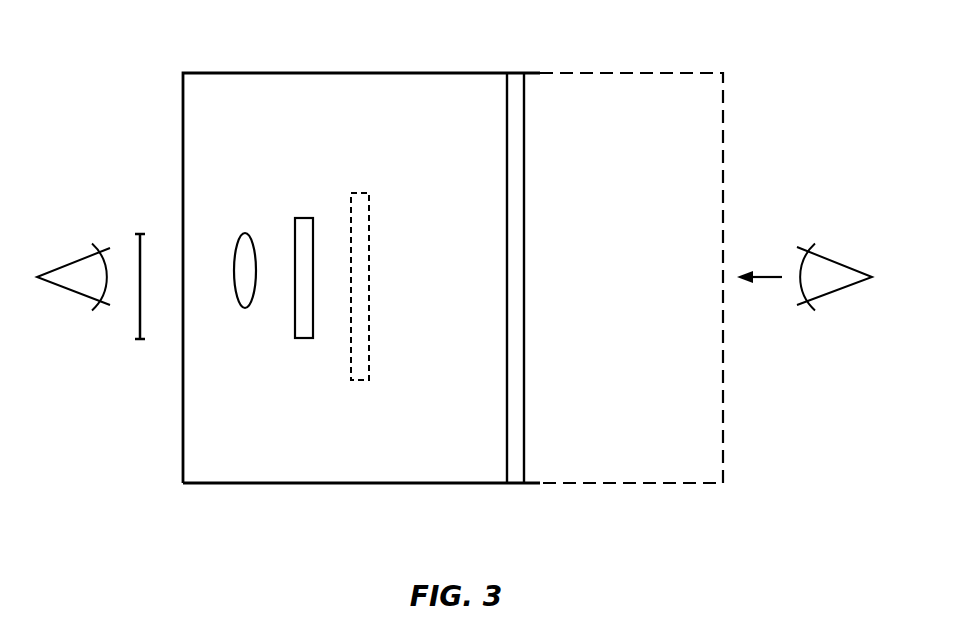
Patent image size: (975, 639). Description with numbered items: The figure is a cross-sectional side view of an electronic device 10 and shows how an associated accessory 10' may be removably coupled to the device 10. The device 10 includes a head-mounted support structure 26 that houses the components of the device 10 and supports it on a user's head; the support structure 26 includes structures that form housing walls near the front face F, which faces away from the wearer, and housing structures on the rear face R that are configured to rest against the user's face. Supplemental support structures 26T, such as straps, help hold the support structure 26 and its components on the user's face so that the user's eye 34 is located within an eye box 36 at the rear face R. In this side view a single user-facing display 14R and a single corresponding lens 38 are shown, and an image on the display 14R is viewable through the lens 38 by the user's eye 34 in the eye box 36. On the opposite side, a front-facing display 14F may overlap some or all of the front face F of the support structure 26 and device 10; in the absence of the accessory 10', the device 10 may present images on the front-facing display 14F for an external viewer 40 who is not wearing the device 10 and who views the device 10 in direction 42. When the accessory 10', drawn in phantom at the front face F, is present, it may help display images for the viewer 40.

The electronic device 10 is at (361, 244).
The accessory 10' is at (631, 244).
The front-facing display 14F is at (512, 470).
The user-facing display 14R is at (305, 338).
The head-mounted support structure 26 is at (405, 484).
The support structures 26T is at (357, 380).
The user's eye 34 is at (60, 286).
The eye box 36 is at (140, 341).
The lens 38 is at (245, 308).
The viewer 40 is at (837, 286).
The direction 42 is at (766, 279).
The rear face R is at (171, 472).
The front face F is at (535, 460).